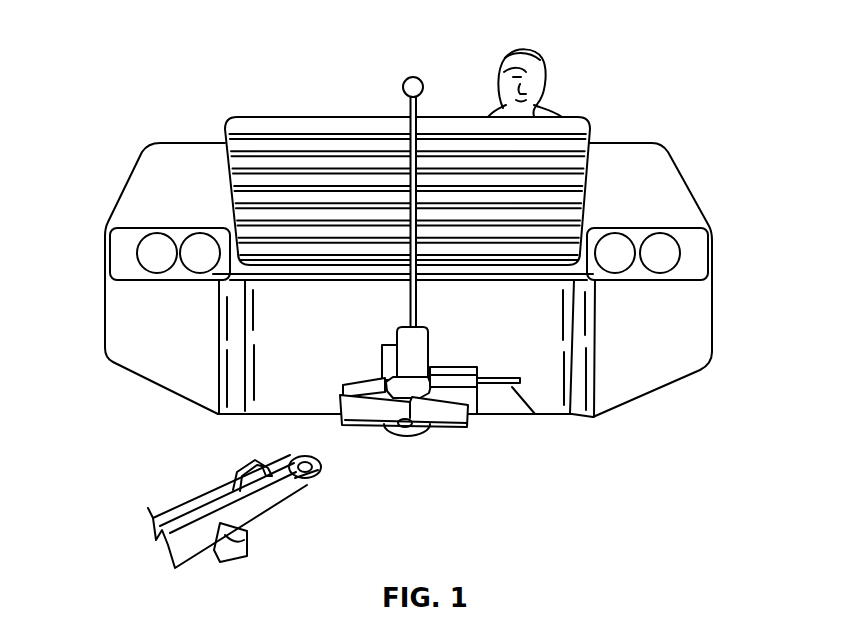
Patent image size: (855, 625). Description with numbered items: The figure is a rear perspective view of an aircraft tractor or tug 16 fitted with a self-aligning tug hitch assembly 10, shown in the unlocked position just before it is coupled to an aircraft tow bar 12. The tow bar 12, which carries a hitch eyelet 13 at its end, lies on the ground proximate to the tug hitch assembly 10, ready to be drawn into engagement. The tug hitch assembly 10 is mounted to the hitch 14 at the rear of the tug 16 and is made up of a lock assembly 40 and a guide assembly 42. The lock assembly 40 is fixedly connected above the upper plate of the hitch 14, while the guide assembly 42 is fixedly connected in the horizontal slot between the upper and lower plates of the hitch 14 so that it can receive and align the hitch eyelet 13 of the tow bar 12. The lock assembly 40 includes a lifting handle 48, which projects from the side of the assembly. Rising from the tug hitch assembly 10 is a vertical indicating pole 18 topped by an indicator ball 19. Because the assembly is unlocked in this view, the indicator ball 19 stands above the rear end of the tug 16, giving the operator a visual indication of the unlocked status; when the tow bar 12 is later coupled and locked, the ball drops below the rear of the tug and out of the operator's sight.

The self-aligning tug hitch assembly 10 is at (485, 440).
The aircraft tow bar 12 is at (164, 511).
The hitch eyelet 13 is at (322, 474).
The hitch 14 is at (492, 493).
The aircraft tractor or tug 16 is at (697, 330).
The vertical indicating pole 18 is at (411, 110).
The indicator ball 19 is at (406, 80).
The lock assembly 40 is at (404, 348).
The guide assembly 42 is at (338, 405).
The lifting handle 48 is at (585, 431).